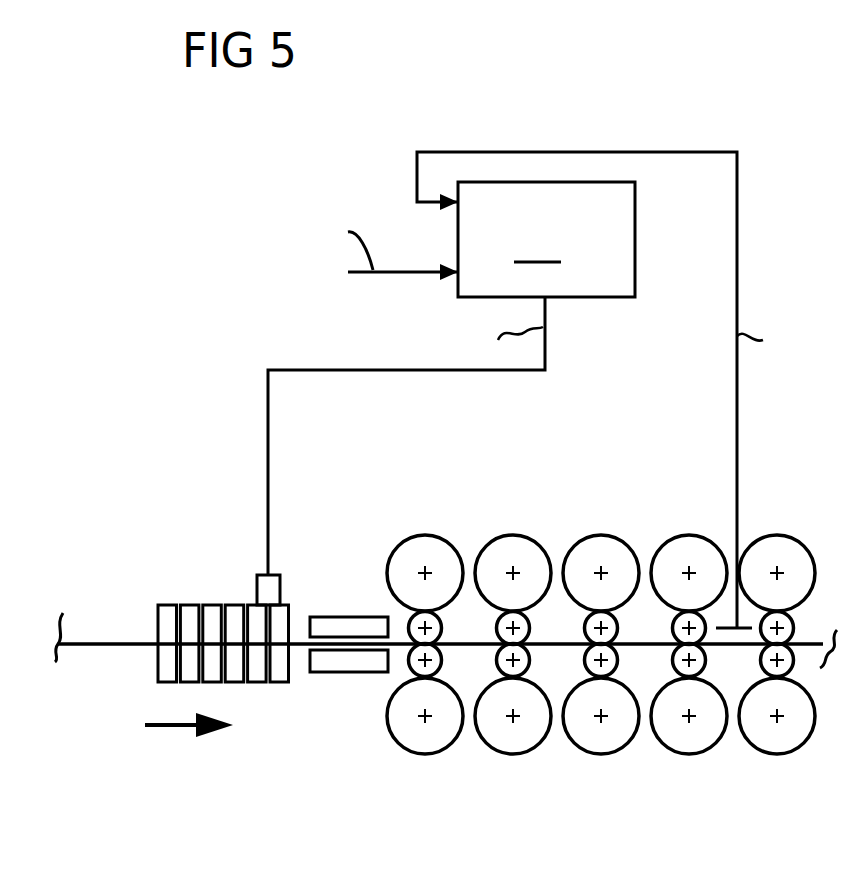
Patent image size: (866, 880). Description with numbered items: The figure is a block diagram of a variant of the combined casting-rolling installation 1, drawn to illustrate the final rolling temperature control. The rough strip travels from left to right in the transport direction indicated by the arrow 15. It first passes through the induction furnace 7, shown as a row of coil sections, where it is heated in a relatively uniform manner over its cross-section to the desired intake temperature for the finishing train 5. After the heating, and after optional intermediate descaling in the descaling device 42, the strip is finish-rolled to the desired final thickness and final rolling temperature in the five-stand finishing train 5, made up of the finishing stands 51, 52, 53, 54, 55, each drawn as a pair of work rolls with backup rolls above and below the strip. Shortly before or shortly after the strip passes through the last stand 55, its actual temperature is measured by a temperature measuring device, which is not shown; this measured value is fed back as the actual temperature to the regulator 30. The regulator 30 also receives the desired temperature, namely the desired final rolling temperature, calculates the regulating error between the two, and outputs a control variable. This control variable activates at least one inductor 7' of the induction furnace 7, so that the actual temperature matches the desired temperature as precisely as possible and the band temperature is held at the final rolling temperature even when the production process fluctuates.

The combined casting-rolling installation 1 is at (174, 352).
The finishing train 5 is at (637, 453).
The induction furnace 7 is at (223, 552).
The inductor 7' is at (269, 655).
The arrow 15 is at (173, 730).
The regulator 30 is at (533, 390).
The descaling device 42 is at (343, 573).
The finishing stand 51 is at (425, 742).
The finishing stand 52 is at (513, 742).
The finishing stand 53 is at (601, 742).
The finishing stand 54 is at (689, 742).
The finishing stand 55 is at (777, 742).